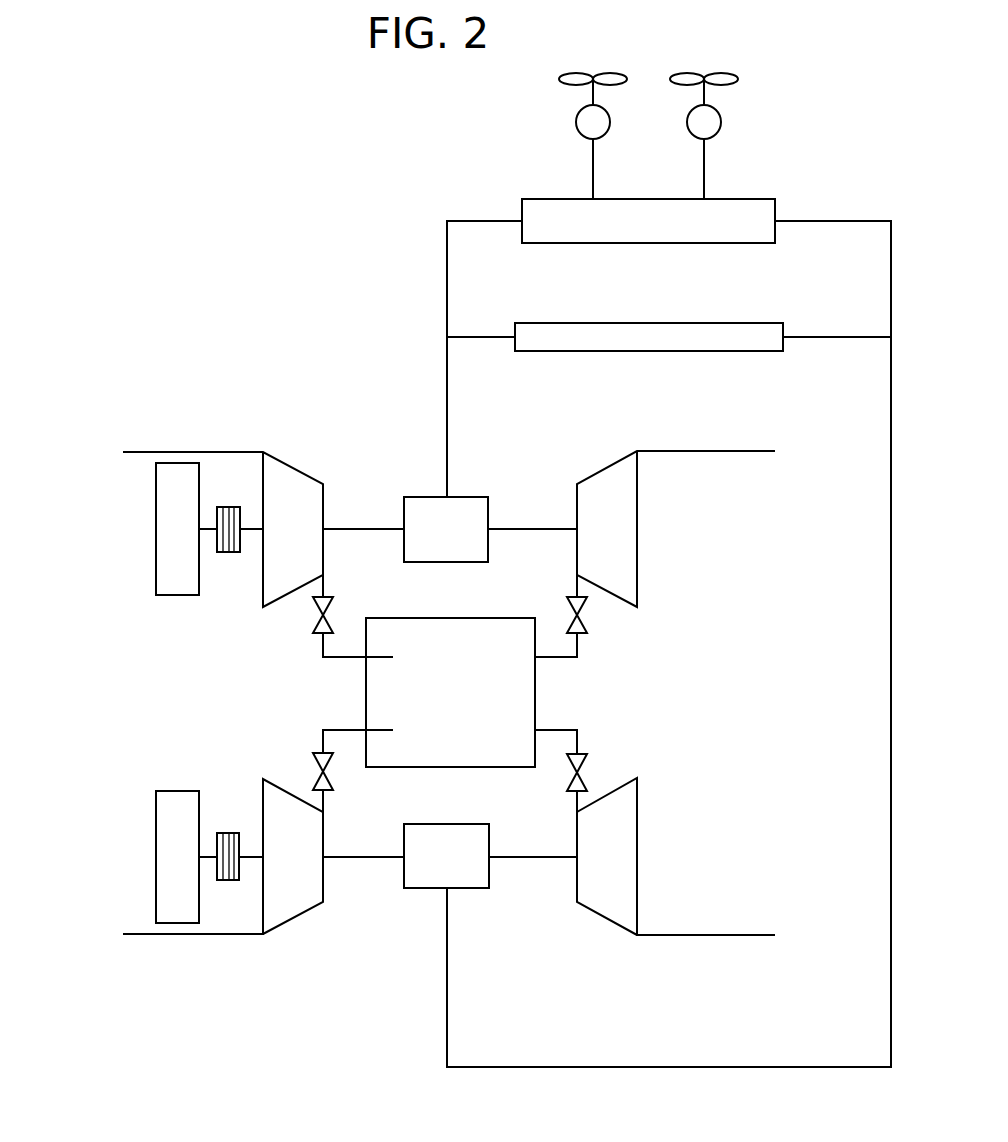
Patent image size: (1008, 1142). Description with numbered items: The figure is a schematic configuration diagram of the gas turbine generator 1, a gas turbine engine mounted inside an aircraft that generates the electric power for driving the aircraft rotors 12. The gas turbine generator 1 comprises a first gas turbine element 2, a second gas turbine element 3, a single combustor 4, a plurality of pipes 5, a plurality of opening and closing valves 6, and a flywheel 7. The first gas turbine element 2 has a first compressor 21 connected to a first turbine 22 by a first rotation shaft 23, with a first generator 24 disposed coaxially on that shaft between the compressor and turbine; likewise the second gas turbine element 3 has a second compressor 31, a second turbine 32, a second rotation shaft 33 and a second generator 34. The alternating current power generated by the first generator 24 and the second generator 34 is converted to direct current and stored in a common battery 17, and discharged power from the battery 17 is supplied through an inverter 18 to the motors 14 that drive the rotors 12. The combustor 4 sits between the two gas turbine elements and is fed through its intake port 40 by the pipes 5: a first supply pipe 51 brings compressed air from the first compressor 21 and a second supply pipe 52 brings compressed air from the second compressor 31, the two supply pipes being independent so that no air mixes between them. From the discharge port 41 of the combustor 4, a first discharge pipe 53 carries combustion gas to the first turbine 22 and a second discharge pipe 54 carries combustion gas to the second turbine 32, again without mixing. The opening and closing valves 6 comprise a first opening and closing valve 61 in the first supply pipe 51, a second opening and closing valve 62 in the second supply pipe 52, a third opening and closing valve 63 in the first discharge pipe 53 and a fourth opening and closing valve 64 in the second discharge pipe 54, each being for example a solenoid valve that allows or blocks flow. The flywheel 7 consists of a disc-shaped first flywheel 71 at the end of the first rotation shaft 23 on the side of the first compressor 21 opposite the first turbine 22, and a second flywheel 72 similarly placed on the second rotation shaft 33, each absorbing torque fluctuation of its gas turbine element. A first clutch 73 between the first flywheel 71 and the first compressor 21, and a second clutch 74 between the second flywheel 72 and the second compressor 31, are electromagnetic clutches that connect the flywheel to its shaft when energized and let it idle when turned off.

The gas turbine generator 1 is at (152, 146).
The rotor 12 is at (592, 76).
The motor 14 is at (576, 122).
The battery 17 is at (730, 351).
The inverter 18 is at (673, 243).
The first gas turbine element 2 is at (712, 524).
The first compressor 21 is at (292, 468).
The first turbine 22 is at (607, 468).
The first rotation shaft 23 is at (358, 527).
The first generator 24 is at (415, 497).
The second gas turbine element 3 is at (712, 847).
The second compressor 31 is at (293, 920).
The second turbine 32 is at (610, 920).
The second rotation shaft 33 is at (375, 857).
The second generator 34 is at (470, 888).
The combustor 4 is at (488, 618).
The intake port 40 is at (365, 728).
The discharge port 41 is at (536, 728).
The pipes 5 is at (602, 748).
The first supply pipe 51 is at (322, 643).
The second supply pipe 52 is at (346, 727).
The first discharge pipe 53 is at (562, 657).
The second discharge pipe 54 is at (550, 730).
The opening and closing valves 6 is at (595, 636).
The first opening and closing valve 61 is at (333, 614).
The second opening and closing valve 62 is at (313, 772).
The third opening and closing valve 63 is at (587, 615).
The fourth opening and closing valve 64 is at (587, 773).
The flywheel 7 is at (145, 693).
The first flywheel 71 is at (162, 543).
The second flywheel 72 is at (162, 841).
The first clutch 73 is at (226, 552).
The second clutch 74 is at (226, 833).